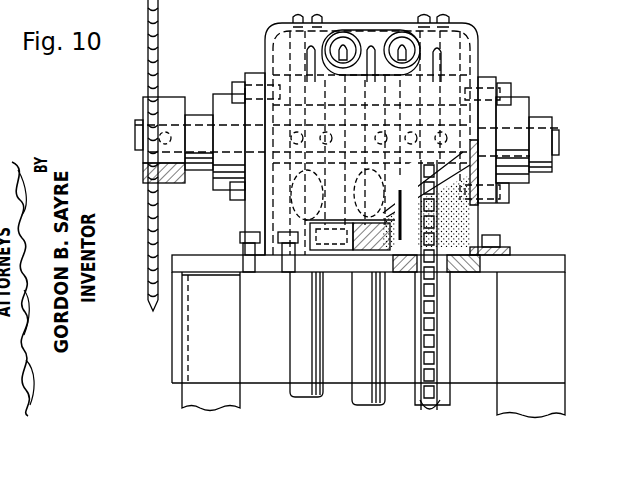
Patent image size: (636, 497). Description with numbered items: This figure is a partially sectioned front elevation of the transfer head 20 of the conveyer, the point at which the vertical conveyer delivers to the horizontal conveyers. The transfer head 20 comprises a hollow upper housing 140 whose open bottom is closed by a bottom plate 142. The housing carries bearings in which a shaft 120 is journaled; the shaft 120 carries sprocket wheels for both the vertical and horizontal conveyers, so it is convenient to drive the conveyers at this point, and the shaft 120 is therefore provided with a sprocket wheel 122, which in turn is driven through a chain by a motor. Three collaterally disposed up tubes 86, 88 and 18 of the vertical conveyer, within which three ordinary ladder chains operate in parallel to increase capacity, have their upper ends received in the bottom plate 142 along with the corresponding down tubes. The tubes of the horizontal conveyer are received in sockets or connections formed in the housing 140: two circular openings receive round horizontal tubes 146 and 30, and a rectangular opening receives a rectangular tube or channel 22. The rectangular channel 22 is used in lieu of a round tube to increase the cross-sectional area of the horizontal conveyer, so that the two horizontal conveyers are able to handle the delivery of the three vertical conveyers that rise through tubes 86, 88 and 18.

The tube 18 is at (421, 345).
The transfer head 20 is at (482, 40).
The rectangular tube or channel 22 is at (350, 263).
The horizontal tube 30 is at (402, 28).
The tube 86 is at (296, 345).
The tube 88 is at (358, 345).
The shaft 120 is at (560, 140).
The sprocket wheel 122 is at (160, 20).
The hollow upper housing 140 is at (270, 38).
The bottom plate 142 is at (530, 262).
The horizontal tube 146 is at (330, 29).